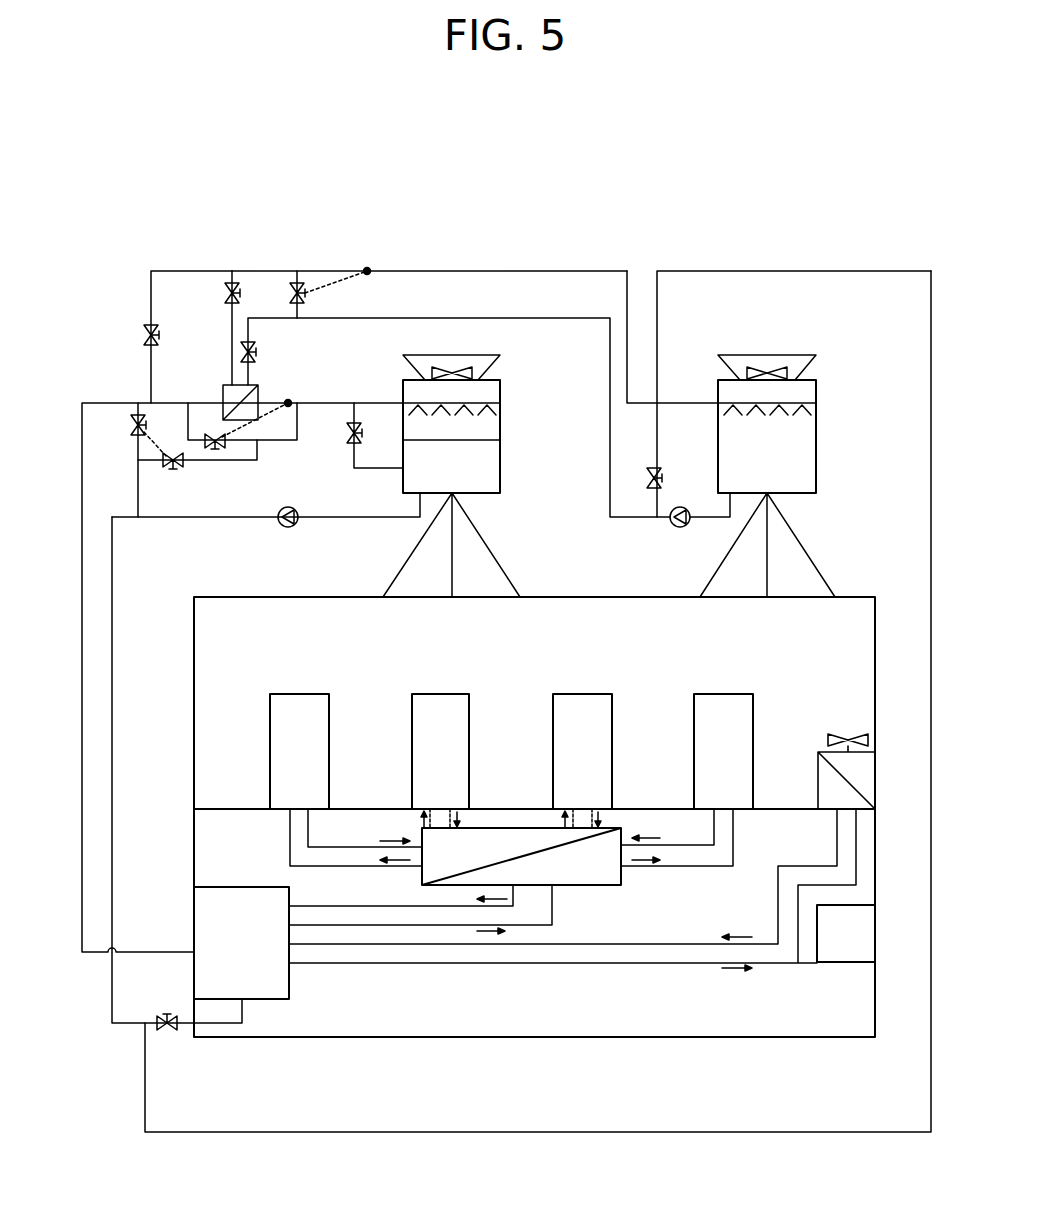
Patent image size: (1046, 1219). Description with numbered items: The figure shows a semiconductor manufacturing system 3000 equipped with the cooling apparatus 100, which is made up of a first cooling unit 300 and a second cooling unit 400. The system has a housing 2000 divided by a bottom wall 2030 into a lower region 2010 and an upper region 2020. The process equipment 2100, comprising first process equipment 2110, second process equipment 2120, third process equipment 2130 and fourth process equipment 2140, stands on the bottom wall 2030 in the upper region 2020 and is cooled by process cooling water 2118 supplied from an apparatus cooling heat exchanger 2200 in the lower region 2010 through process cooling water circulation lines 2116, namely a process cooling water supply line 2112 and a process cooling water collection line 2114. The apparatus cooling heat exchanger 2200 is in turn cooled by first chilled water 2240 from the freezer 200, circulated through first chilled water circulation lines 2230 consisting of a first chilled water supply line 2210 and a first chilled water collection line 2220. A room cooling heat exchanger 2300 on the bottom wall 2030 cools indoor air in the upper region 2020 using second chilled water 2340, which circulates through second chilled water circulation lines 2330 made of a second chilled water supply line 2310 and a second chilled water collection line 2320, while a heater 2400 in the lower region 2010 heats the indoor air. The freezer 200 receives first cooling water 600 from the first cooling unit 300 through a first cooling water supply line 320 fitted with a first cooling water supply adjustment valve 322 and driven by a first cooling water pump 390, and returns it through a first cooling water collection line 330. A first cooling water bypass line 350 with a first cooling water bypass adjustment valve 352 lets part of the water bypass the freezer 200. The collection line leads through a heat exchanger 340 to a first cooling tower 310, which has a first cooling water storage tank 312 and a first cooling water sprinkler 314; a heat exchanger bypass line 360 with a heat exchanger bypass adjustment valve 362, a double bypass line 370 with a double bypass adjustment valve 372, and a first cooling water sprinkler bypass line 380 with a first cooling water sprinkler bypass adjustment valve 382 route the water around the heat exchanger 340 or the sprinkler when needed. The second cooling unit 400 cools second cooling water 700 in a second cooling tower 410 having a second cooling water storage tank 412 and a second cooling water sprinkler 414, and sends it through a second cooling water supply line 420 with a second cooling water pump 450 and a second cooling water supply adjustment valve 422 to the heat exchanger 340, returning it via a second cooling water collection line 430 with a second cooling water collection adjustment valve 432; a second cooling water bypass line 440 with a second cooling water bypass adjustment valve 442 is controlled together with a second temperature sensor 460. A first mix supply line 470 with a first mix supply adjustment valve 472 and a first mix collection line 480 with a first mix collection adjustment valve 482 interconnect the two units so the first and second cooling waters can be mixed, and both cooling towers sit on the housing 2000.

The cooling apparatus 100 is at (125, 190).
The freezer 200 is at (266, 1001).
The first cooling unit 300 is at (122, 345).
The first cooling tower 310 is at (585, 200).
The first cooling water storage tank 312 is at (490, 494).
The first cooling water sprinkler 314 is at (437, 378).
The first cooling water supply line 320 is at (114, 698).
The first cooling water supply adjustment valve 322 is at (170, 1035).
The first cooling water collection line 330 is at (84, 735).
The heat exchanger 340 is at (260, 390).
The first cooling water bypass line 350 is at (137, 507).
The first cooling water bypass adjustment valve 352 is at (134, 414).
The heat exchanger bypass line 360 is at (276, 442).
The heat exchanger bypass adjustment valve 362 is at (212, 452).
The double bypass line 370 is at (231, 455).
The double bypass adjustment valve 372 is at (174, 452).
The first cooling water sprinkler bypass line 380 is at (350, 453).
The first cooling water sprinkler bypass adjustment valve 382 is at (365, 436).
The first cooling water pump 390 is at (288, 528).
The second cooling unit 400 is at (688, 190).
The second cooling tower 410 is at (775, 200).
The second cooling water storage tank 412 is at (816, 494).
The second cooling water sprinkler 414 is at (752, 378).
The second cooling water supply line 420 is at (627, 271).
The second cooling water supply adjustment valve 422 is at (260, 354).
The second cooling water collection line 430 is at (410, 271).
The second cooling water collection adjustment valve 432 is at (224, 290).
The second cooling water bypass line 440 is at (310, 287).
The second cooling water bypass adjustment valve 442 is at (289, 290).
The second cooling water pump 450 is at (680, 528).
The second temperature sensor 460 is at (367, 268).
The first mix supply line 470 is at (658, 271).
The first mix supply adjustment valve 472 is at (664, 478).
The first mix collection line 480 is at (160, 271).
The first mix collection adjustment valve 482 is at (160, 332).
The first cooling water 600 is at (432, 478).
The second cooling water 700 is at (747, 478).
The housing 2000 is at (848, 1039).
The lower region 2010 is at (213, 853).
The upper region 2020 is at (213, 630).
The bottom wall 2030 is at (222, 807).
The process equipment 2100 is at (275, 640).
The first process equipment 2110 is at (300, 693).
The process cooling water supply line 2112 is at (678, 868).
The process cooling water collection line 2114 is at (703, 850).
The process cooling water circulation lines 2116 is at (590, 1072).
The process cooling water 2118 is at (648, 840).
The second process equipment 2120 is at (440, 693).
The third process equipment 2130 is at (580, 693).
The fourth process equipment 2140 is at (725, 693).
The apparatus cooling heat exchanger 2200 is at (551, 878).
The first chilled water supply line 2210 is at (368, 927).
The first chilled water collection line 2220 is at (440, 908).
The first chilled water circulation lines 2230 is at (312, 1072).
The first chilled water 2240 is at (497, 918).
The room cooling heat exchanger 2300 is at (816, 772).
The second chilled water supply line 2310 is at (568, 965).
The second chilled water collection line 2320 is at (505, 946).
The second chilled water circulation lines 2330 is at (455, 1072).
The second chilled water 2340 is at (735, 935).
The heater 2400 is at (846, 964).
The semiconductor manufacturing system 3000 is at (849, 134).